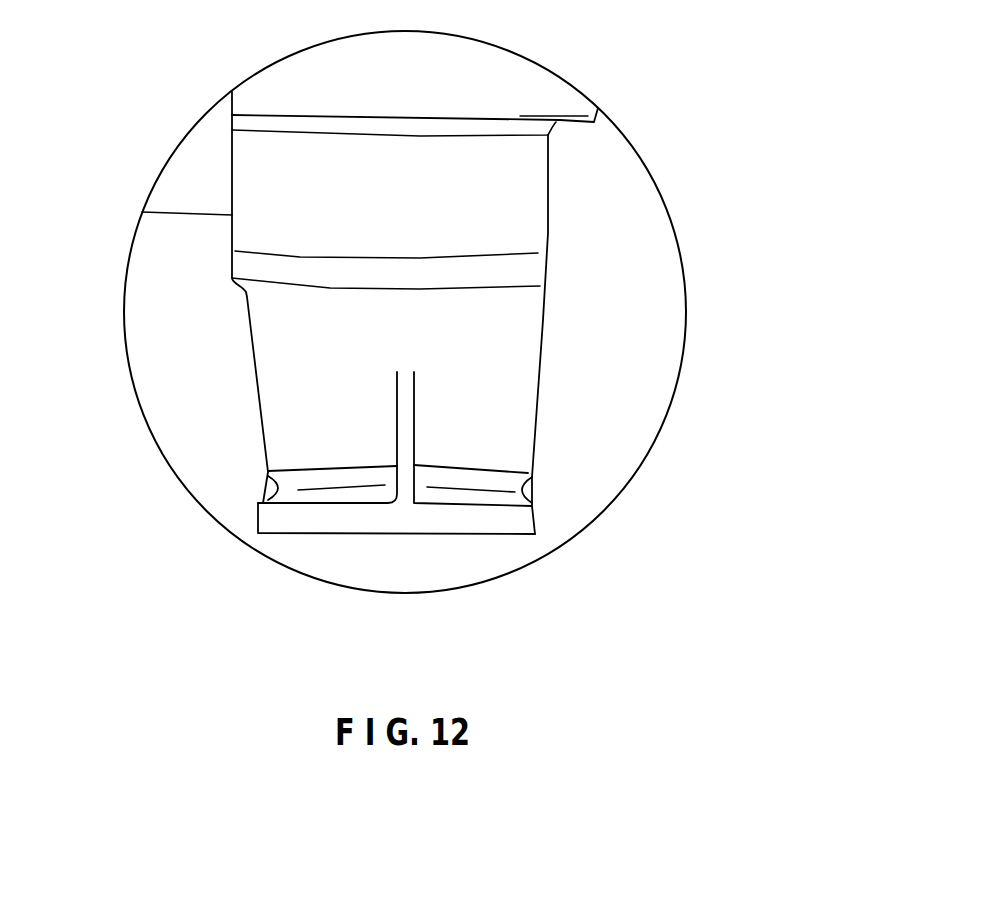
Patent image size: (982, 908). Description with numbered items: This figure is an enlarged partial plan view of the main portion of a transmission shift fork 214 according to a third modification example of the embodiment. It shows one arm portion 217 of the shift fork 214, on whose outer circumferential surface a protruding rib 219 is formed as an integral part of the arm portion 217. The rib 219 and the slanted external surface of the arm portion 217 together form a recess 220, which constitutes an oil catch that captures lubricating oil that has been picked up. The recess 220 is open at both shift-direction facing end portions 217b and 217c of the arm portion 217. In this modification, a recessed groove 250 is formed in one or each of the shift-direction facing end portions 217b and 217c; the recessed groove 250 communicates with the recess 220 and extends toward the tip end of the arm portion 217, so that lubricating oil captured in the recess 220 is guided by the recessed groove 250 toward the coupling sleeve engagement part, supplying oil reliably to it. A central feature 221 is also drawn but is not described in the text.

The shift fork 214 is at (637, 95).
The arm portion 217 is at (548, 232).
The shift-direction facing end portion 217b is at (260, 496).
The shift-direction facing end portion 217c is at (536, 500).
The protruding rib 219 is at (463, 522).
The recess 220 is at (346, 480).
The central rib 221 is at (410, 400).
The recessed groove 250 is at (266, 475).